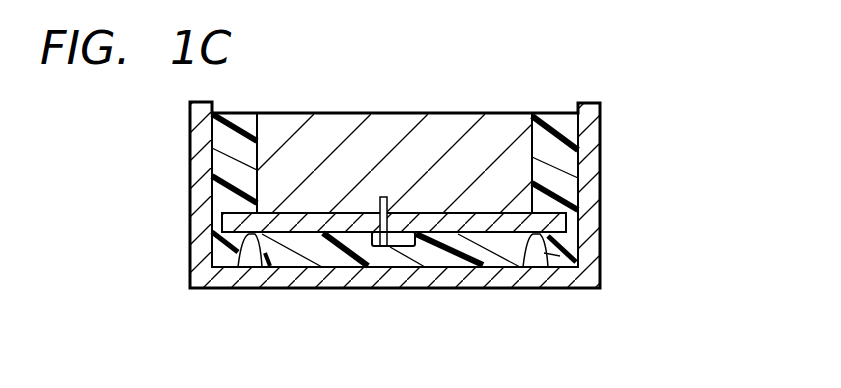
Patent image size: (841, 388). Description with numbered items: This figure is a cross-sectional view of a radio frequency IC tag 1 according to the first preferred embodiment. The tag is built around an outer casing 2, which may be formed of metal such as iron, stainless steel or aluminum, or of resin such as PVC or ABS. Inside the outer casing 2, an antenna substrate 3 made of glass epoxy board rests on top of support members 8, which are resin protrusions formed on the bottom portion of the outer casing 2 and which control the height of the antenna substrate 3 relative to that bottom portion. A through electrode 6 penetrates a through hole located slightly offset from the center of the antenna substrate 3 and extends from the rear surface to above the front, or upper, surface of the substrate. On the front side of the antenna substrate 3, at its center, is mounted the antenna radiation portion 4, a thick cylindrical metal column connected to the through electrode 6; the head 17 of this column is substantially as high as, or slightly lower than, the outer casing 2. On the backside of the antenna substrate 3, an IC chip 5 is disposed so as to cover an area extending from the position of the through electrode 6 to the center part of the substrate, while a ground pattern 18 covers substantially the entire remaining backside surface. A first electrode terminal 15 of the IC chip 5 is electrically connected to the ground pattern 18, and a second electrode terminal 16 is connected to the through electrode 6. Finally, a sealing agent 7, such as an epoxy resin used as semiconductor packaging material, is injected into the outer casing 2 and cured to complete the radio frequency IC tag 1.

The radio frequency IC tag 1 is at (446, 213).
The outer casing 2 is at (590, 161).
The antenna substrate 3 is at (566, 222).
The antenna radiation portion 4 is at (302, 157).
The IC chip 5 is at (391, 247).
The through electrode 6 is at (326, 233).
The sealing agent 7 is at (555, 135).
The support members 8 is at (560, 256).
The first electrode terminal 15 is at (418, 238).
The second electrode terminal 16 is at (383, 247).
The head 17 is at (417, 113).
The ground pattern 18 is at (514, 237).